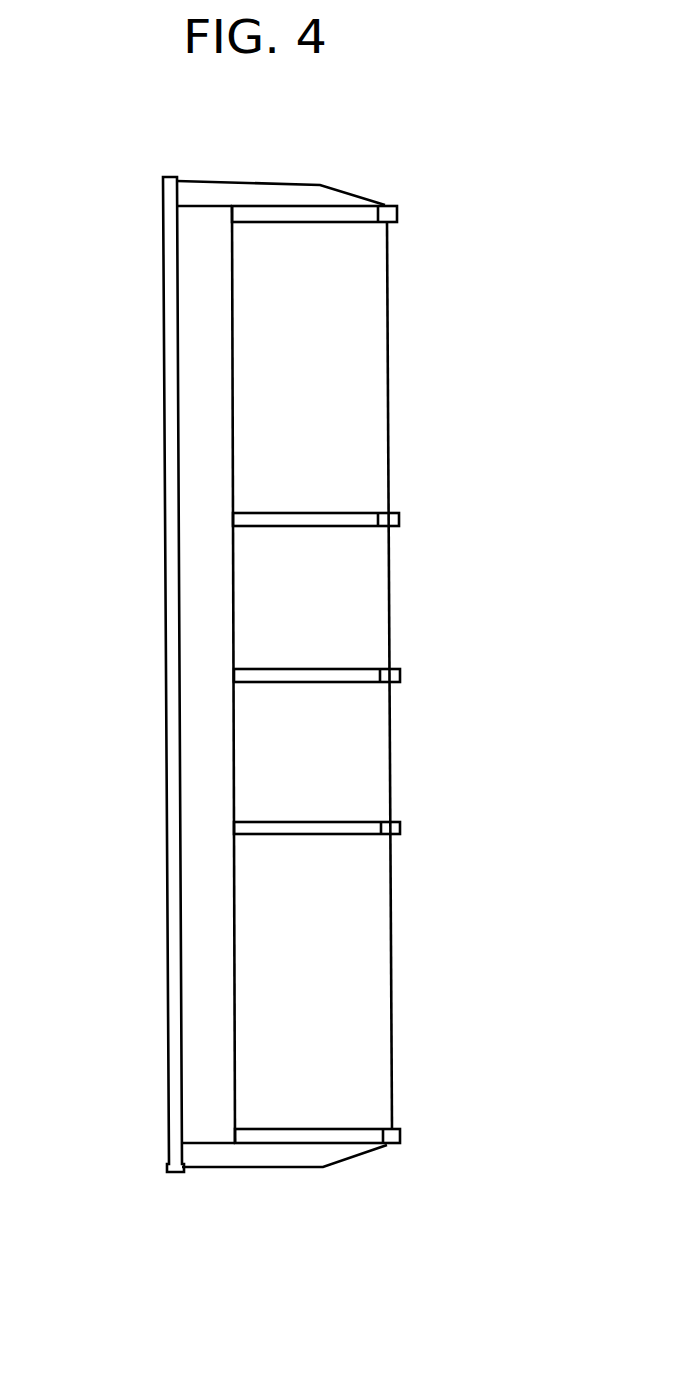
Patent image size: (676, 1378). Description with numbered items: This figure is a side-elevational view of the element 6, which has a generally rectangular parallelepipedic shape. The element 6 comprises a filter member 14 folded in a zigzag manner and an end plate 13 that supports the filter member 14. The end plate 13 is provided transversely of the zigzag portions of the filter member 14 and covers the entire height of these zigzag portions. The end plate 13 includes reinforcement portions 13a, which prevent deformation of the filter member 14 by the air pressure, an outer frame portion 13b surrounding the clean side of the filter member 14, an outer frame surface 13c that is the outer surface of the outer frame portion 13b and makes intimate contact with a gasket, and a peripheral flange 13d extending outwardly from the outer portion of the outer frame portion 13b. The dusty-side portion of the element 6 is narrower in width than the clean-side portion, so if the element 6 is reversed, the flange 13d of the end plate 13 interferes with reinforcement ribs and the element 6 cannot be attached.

The element 6 is at (363, 395).
The end plate 13 is at (203, 703).
The reinforcement portions 13a is at (400, 518).
The outer frame portion 13b is at (203, 333).
The outer frame surface 13c is at (163, 428).
The peripheral flange 13d is at (163, 193).
The filter member 14 is at (370, 302).